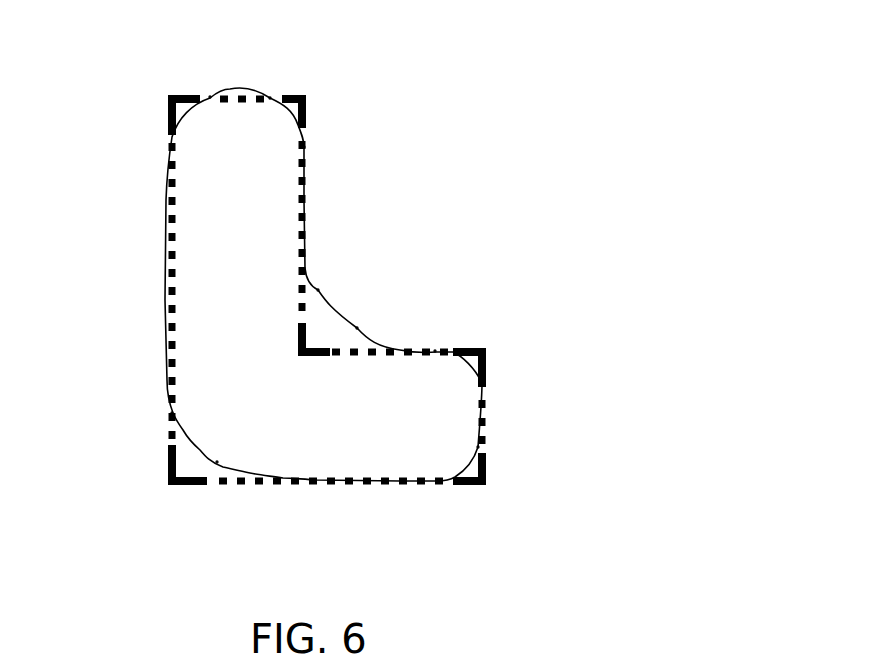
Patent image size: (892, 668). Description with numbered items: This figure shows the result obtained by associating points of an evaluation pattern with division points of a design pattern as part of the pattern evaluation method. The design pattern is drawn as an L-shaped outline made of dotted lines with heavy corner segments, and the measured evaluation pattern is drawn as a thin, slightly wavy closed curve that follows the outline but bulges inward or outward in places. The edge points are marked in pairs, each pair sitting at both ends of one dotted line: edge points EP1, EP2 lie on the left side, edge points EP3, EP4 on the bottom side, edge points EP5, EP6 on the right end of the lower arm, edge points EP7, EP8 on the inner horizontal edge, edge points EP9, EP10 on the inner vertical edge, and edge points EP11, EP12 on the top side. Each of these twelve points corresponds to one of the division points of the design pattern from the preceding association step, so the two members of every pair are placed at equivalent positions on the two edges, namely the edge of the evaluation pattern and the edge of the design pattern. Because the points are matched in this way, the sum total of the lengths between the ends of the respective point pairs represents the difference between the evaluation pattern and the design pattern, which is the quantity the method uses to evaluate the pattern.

The edge point EP1 is at (172, 132).
The edge point EP2 is at (172, 413).
The edge point EP3 is at (217, 462).
The edge point EP4 is at (438, 481).
The edge point EP5 is at (478, 447).
The edge point EP6 is at (482, 383).
The edge point EP7 is at (435, 351).
The edge point EP8 is at (357, 328).
The edge point EP9 is at (318, 290).
The edge point EP10 is at (304, 147).
The edge point EP11 is at (270, 98).
The edge point EP12 is at (210, 97).